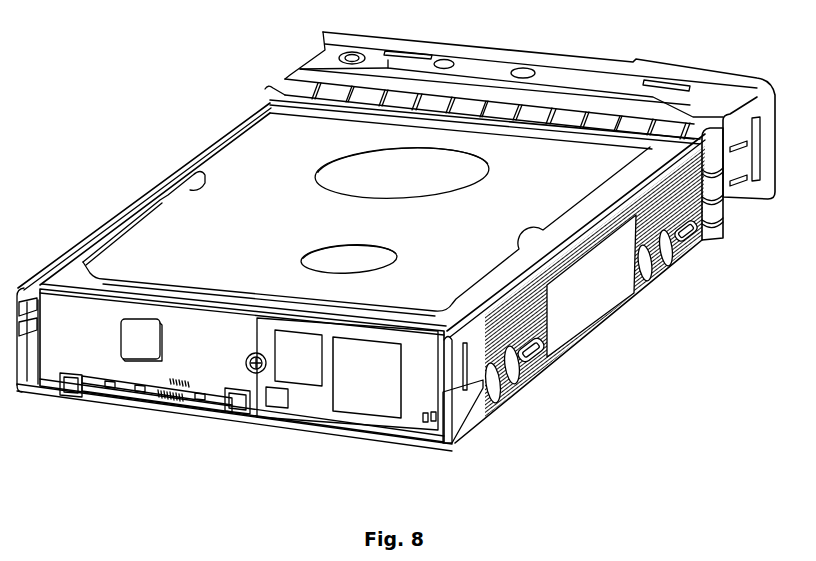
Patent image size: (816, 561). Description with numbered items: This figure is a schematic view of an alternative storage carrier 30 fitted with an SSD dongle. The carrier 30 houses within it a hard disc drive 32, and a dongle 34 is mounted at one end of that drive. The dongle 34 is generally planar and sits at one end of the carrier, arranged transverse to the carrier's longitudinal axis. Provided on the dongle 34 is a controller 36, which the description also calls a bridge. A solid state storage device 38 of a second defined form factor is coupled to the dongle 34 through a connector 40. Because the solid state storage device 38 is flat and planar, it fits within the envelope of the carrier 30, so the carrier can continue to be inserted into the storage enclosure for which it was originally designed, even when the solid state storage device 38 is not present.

The carrier 30 is at (228, 86).
The hard disc drive 32 is at (155, 248).
The dongle 34 is at (63, 345).
The controller 36 is at (143, 348).
The solid state storage device 38 is at (307, 396).
The connector 40 is at (443, 390).